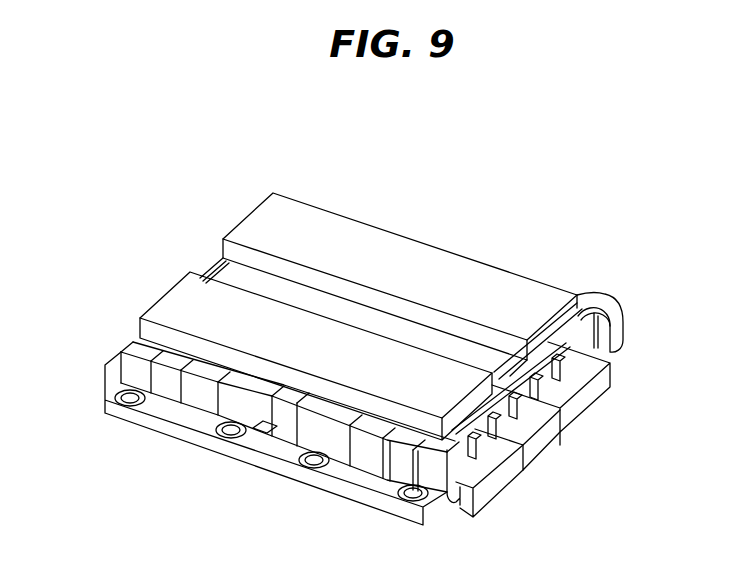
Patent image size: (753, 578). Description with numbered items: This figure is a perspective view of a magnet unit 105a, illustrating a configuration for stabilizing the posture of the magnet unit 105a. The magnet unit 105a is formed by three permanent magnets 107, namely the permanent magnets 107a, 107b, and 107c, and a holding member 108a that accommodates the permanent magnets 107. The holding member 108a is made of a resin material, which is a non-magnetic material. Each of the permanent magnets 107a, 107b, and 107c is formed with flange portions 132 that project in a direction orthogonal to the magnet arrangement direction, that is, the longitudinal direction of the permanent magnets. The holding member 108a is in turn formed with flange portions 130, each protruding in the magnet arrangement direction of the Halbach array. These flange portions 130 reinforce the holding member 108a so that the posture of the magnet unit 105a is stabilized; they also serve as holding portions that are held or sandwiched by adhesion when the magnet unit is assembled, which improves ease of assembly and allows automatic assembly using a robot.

The magnet unit 105a is at (482, 212).
The permanent magnet 107 is at (167, 105).
The permanent magnet 107a is at (182, 302).
The permanent magnet 107b is at (227, 277).
The permanent magnet 107c is at (267, 223).
The holding member 108a is at (587, 358).
The flange portion 130 is at (183, 413).
The flange portion 132 is at (588, 383).